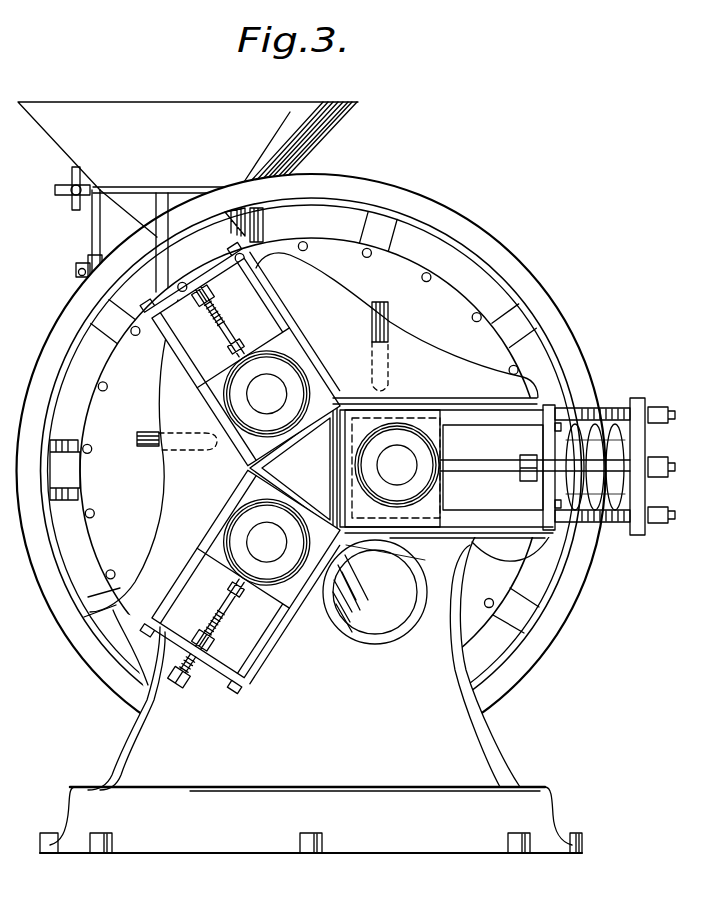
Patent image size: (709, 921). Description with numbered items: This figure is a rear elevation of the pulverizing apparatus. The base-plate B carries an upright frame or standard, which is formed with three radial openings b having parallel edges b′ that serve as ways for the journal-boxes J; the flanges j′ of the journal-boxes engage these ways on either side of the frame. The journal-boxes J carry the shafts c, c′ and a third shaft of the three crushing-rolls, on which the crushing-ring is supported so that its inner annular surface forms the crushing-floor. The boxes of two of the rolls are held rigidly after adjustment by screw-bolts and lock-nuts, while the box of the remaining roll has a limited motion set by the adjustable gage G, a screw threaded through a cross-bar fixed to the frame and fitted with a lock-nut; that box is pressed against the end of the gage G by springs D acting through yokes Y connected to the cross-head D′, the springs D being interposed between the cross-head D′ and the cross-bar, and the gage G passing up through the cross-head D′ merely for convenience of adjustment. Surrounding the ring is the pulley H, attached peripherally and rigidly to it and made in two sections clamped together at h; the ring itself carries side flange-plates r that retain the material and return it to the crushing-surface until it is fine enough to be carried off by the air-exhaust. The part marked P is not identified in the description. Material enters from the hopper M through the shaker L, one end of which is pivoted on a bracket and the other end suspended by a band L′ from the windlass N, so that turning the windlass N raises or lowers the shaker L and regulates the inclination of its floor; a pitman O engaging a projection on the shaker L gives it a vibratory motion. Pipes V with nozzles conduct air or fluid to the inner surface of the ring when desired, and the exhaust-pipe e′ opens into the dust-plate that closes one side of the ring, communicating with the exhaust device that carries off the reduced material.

The hopper M is at (188, 147).
The windlass N is at (60, 186).
The band L′ is at (103, 232).
The shaker L is at (90, 262).
The pitman O is at (76, 276).
The wheel / rotating disk P is at (466, 177).
The pulley H is at (585, 300).
The base-plate B is at (358, 817).
The journal-box J is at (318, 398).
The flange of journal-box j′ is at (300, 350).
The radial opening b is at (312, 479).
The parallel edge (way) b′ is at (365, 456).
The shaft of crushing-roll c is at (397, 465).
The shaft of crushing-roll c′ is at (266, 393).
The adjustable gage G is at (481, 468).
The spring D is at (648, 500).
The cross-head D′ is at (661, 465).
The yoke Y is at (615, 403).
The exhaust-pipe e′ is at (375, 592).
The pipe V is at (427, 310).
The clamp of pulley sections h is at (18, 470).
The flange-plate r is at (123, 495).